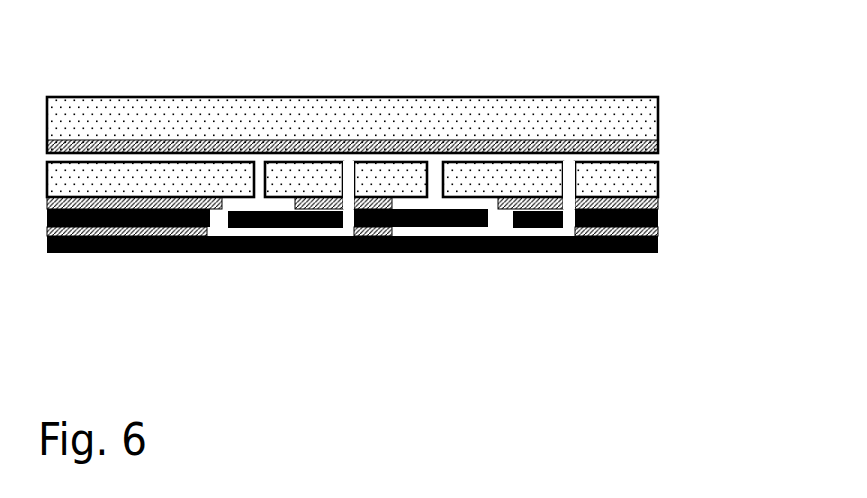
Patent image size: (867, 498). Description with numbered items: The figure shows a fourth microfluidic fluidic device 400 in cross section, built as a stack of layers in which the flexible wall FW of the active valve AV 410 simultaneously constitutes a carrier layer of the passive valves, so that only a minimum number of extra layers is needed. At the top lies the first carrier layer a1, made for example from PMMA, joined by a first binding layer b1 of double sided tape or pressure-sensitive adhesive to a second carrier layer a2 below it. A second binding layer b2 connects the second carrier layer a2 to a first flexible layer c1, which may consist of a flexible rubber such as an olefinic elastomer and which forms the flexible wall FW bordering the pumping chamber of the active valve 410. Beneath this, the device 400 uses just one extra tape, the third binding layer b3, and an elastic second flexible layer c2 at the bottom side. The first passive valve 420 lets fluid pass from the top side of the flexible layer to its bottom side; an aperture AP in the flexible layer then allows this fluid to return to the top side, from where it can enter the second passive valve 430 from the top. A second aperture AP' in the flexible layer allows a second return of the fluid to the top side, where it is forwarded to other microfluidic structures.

The fluidic device 400 is at (85, 76).
The active valve 410 is at (404, 303).
The first passive valve 420 is at (235, 192).
The second passive valve 430 is at (466, 190).
The aperture AP is at (339, 110).
The second aperture AP' is at (556, 243).
The flexible wall FW is at (348, 253).
The first carrier layer a1 is at (644, 122).
The first binding layer b1 is at (647, 148).
The second carrier layer a2 is at (651, 181).
The second binding layer b2 is at (652, 206).
The first flexible layer c1 is at (656, 218).
The third binding layer b3 is at (657, 231).
The second flexible layer c2 is at (657, 244).